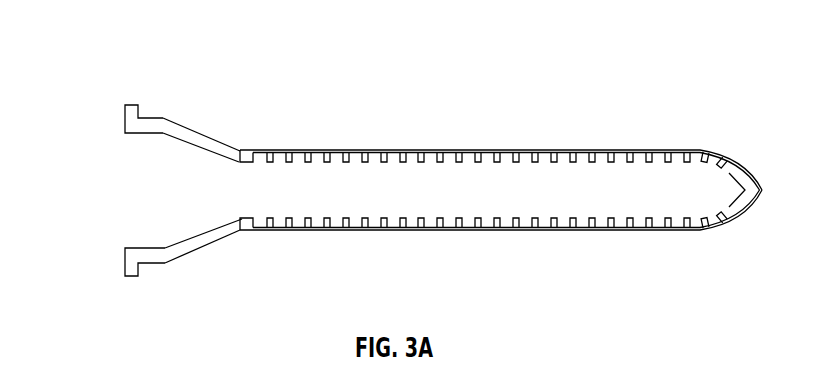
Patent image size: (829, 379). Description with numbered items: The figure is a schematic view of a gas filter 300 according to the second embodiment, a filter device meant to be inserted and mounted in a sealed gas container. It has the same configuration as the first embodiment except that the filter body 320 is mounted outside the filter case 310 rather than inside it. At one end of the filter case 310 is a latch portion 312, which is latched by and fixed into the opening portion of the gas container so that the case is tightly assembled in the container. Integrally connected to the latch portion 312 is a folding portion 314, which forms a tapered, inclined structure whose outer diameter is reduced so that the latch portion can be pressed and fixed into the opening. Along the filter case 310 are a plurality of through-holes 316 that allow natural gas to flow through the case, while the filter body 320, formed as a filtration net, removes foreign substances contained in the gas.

The gas filter 300 is at (152, 47).
The filter case 310 is at (396, 138).
The latch portion 312 is at (130, 109).
The folding portion 314 is at (207, 136).
The through-holes 316 is at (489, 158).
The filter body 320 is at (580, 148).